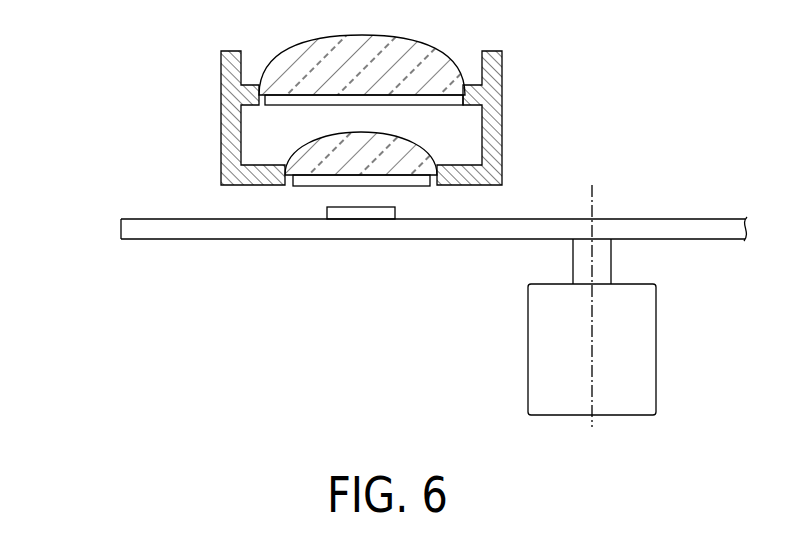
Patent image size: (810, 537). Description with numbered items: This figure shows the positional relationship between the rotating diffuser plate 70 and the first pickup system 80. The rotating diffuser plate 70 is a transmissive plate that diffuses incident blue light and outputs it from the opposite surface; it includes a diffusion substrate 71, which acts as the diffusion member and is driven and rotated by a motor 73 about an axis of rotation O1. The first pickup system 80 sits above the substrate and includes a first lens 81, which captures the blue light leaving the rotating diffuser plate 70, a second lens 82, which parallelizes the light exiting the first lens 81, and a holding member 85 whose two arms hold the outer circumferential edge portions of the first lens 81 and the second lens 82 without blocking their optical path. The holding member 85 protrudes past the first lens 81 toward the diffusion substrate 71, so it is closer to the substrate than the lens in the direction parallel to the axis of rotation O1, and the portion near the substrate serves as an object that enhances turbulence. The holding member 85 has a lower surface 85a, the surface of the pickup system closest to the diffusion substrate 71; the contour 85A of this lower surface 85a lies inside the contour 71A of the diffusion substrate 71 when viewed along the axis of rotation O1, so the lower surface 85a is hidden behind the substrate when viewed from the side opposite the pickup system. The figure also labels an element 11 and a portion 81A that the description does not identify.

The rotating diffuser plate 70 is at (132, 203).
The diffusion substrate 71 is at (129, 240).
The contour of the diffusion substrate 71A is at (122, 236).
The image sensor 11 is at (372, 215).
The motor 73 is at (633, 372).
The axis of rotation O1 is at (594, 192).
The first pickup system 80 is at (133, 15).
The first lens 81 is at (307, 145).
The first lens flange 81A is at (287, 177).
The second lens 82 is at (289, 54).
The holding member 85 is at (493, 104).
The contour of the lower surface 85A is at (221, 178).
The lower surface 85a is at (463, 185).